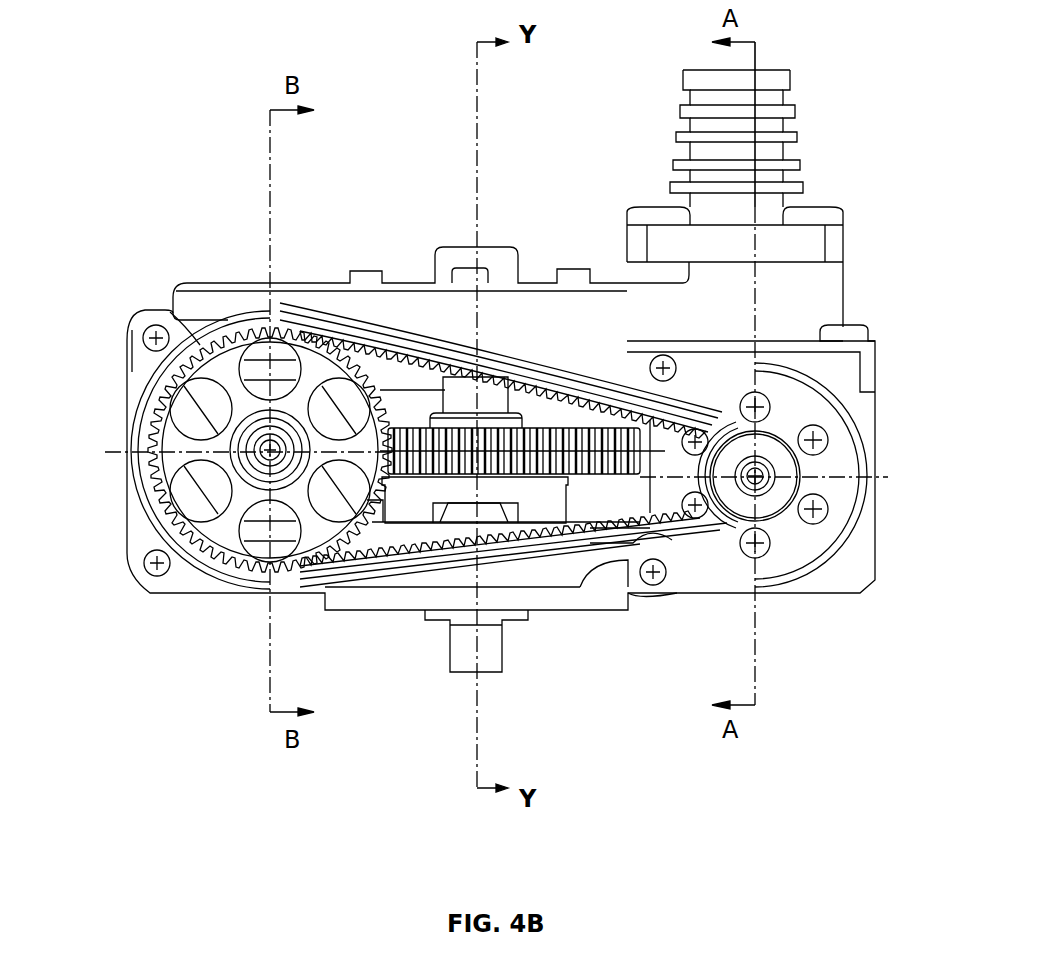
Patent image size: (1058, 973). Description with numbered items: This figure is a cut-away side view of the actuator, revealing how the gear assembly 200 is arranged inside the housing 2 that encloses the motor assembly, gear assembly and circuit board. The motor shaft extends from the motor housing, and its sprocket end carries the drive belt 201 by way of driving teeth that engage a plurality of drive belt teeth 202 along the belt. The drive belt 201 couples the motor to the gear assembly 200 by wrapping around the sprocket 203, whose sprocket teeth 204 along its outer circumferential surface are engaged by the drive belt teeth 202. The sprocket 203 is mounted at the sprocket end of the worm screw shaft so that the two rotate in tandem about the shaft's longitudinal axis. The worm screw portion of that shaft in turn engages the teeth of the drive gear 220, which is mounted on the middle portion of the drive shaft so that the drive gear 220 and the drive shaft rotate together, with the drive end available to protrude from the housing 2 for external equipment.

The gear assembly 200 is at (99, 431).
The housing 2 is at (815, 290).
The sprocket 203 is at (167, 482).
The sprocket teeth 204 is at (230, 568).
The drive belt 201 is at (357, 563).
The drive belt teeth 202 is at (404, 553).
The drive gear 220 is at (568, 437).